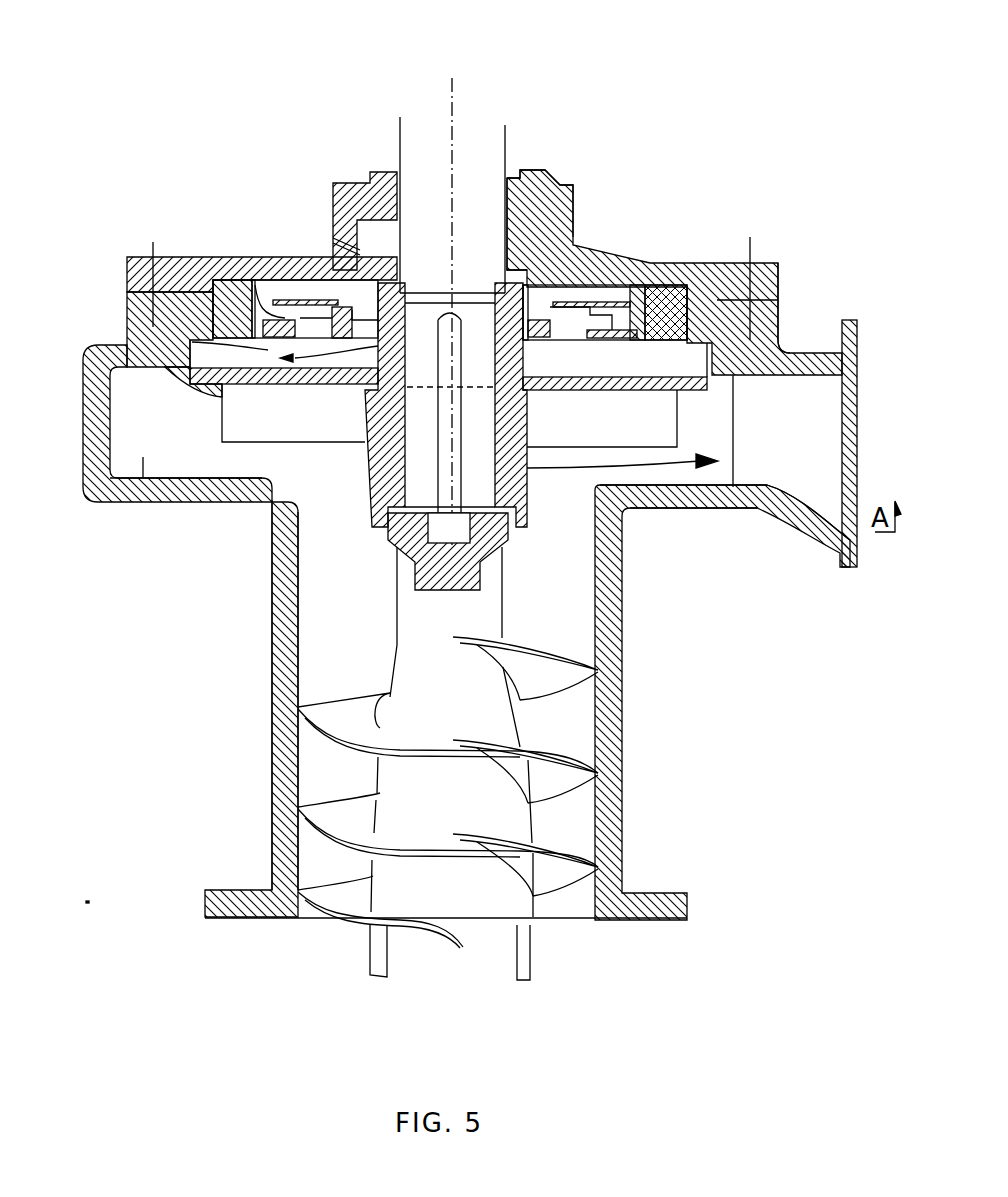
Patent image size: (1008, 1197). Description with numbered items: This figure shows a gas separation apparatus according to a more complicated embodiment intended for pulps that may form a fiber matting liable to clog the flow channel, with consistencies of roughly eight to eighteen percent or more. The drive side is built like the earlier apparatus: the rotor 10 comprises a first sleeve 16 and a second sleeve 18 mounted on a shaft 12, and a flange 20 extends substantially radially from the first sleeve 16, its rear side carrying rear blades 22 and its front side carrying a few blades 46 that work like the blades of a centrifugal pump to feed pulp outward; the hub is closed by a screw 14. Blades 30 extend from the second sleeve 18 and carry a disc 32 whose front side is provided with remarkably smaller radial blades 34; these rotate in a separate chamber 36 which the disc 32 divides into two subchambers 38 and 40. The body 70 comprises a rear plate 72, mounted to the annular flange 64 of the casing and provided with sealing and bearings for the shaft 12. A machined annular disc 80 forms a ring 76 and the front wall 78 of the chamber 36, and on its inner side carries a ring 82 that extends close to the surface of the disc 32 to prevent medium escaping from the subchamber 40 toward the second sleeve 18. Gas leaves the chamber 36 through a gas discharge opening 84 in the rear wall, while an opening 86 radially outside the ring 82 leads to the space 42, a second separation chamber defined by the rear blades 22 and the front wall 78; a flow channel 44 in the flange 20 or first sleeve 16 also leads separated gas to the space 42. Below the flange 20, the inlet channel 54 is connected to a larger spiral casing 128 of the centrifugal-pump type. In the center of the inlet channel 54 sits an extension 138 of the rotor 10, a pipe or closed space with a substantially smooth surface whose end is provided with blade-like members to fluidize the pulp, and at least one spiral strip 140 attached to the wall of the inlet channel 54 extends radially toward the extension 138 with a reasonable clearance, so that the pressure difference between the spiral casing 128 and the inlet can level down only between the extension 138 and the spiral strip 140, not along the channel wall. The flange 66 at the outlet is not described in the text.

The rotor 10 is at (702, 493).
The shaft 12 is at (468, 148).
The screw 14 is at (470, 588).
The first sleeve 16 is at (527, 430).
The second sleeve 18 is at (565, 245).
The flange 20 is at (748, 300).
The rear blades 22 is at (712, 330).
The blades 30 is at (683, 262).
The disc 32 is at (265, 300).
The radial blades 34 is at (255, 305).
The chamber 36 is at (265, 300).
The subchamber 38 is at (292, 300).
The subchamber 40 is at (150, 330).
The space 42 is at (150, 418).
The flow channel 44 is at (275, 503).
The blades 46 is at (248, 430).
The inlet channel 54 is at (610, 640).
The annular flange 64 is at (782, 330).
The outlet flange 66 is at (849, 318).
The body 70 is at (582, 173).
The rear plate 72 is at (596, 218).
The ring 76 is at (622, 320).
The front wall 78 is at (668, 300).
The annular disc 80 is at (127, 293).
The ring 82 is at (316, 238).
The gas discharge opening 84 is at (490, 108).
The opening 86 is at (636, 290).
The spiral casing 128 is at (143, 478).
The extension 138 is at (513, 880).
The spiral strip 140 is at (557, 770).